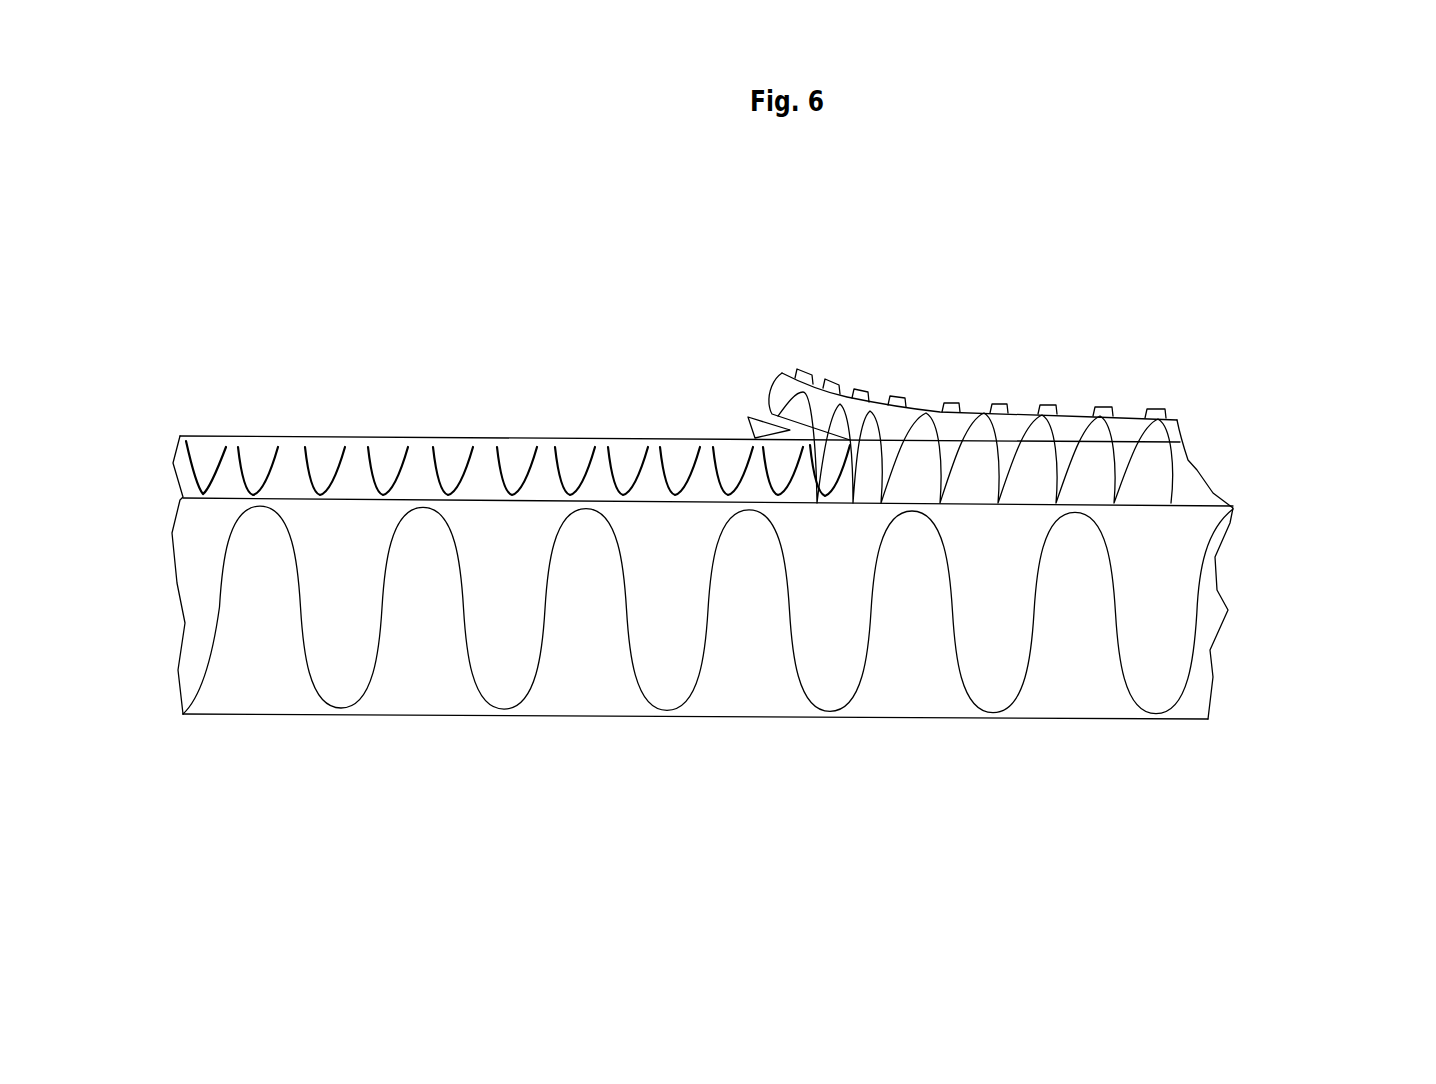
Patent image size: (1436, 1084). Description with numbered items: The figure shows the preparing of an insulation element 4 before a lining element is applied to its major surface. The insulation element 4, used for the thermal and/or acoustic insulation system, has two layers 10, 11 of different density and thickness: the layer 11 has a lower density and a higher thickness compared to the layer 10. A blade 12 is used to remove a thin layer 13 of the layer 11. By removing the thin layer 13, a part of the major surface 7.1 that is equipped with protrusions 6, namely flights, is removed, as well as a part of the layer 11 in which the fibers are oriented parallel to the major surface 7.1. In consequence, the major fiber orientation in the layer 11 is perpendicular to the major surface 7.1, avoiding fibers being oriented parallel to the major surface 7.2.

The insulation element 4 is at (1328, 476).
The protrusions 6 is at (997, 402).
The major surface 7.1 is at (843, 396).
The major surface 7.2 is at (480, 437).
The layer 10 is at (248, 678).
The layer 11 is at (323, 457).
The blade 12 is at (762, 425).
The thin layer 13 is at (1128, 432).